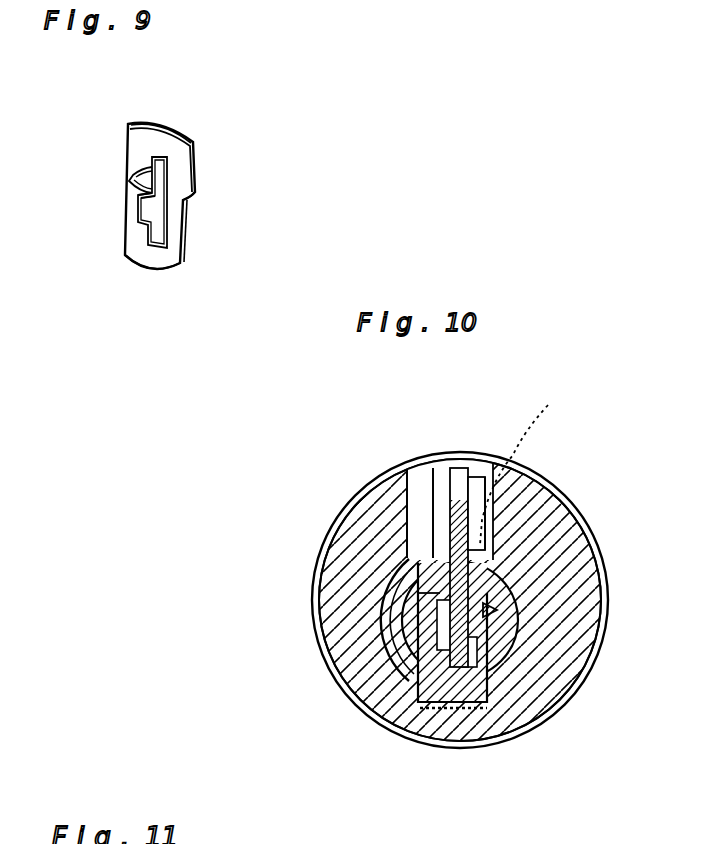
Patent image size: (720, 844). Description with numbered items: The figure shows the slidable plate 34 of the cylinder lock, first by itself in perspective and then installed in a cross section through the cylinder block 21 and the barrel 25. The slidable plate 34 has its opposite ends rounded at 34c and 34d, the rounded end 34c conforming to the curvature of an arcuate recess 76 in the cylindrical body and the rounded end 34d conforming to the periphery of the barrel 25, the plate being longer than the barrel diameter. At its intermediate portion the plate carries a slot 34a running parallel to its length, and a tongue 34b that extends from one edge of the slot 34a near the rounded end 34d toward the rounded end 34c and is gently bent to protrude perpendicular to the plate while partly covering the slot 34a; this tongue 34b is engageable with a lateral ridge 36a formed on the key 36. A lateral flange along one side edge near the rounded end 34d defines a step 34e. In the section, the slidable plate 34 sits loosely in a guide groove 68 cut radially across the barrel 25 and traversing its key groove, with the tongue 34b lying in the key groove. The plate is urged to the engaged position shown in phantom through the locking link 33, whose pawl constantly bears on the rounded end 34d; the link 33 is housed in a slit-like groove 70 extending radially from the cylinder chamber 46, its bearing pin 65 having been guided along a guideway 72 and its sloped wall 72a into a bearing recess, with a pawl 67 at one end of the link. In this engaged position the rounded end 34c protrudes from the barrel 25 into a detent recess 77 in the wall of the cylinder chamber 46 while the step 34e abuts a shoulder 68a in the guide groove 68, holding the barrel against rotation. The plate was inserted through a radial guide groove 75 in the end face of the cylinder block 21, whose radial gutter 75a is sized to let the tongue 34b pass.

In FIG. 10, the cylinder block 21 is at (397, 543).
In FIG. 10, the barrel 25 is at (498, 675).
In FIG. 10, the locking link 33 is at (500, 535).
In FIG. 9, the slidable plate 34 is at (115, 143).
In FIG. 10, the slidable plate 34 is at (520, 575).
In FIG. 9, the slot 34a is at (150, 207).
In FIG. 10, the slot 34a is at (457, 633).
In FIG. 9, the tongue 34b is at (134, 190).
In FIG. 10, the tongue 34b is at (417, 593).
In FIG. 9, the rounded end 34c is at (147, 263).
In FIG. 10, the rounded end 34c is at (472, 700).
In FIG. 9, the rounded end 34d is at (163, 124).
In FIG. 10, the rounded end 34d is at (407, 570).
In FIG. 9, the step 34e is at (188, 201).
In FIG. 10, the step 34e is at (487, 593).
In FIG. 10, the key 36 is at (527, 713).
In FIG. 10, the lateral ridge 36a is at (410, 688).
In FIG. 10, the cylinder chamber 46 is at (530, 630).
In FIG. 10, the bearing pin 65 is at (524, 464).
In FIG. 10, the pawl 67 is at (420, 522).
In FIG. 10, the guide groove 68 is at (417, 657).
In FIG. 10, the shoulder 68a is at (505, 657).
In FIG. 10, the slit-like groove 70 is at (460, 468).
In FIG. 10, the guideway 72 is at (478, 477).
In FIG. 10, the sloped wall 72a is at (510, 530).
In FIG. 10, the radial guide groove 75 is at (408, 473).
In FIG. 10, the radial gutter 75a is at (433, 470).
In FIG. 10, the arcuate recess 76 is at (383, 608).
In FIG. 10, the detent recess 77 is at (435, 705).